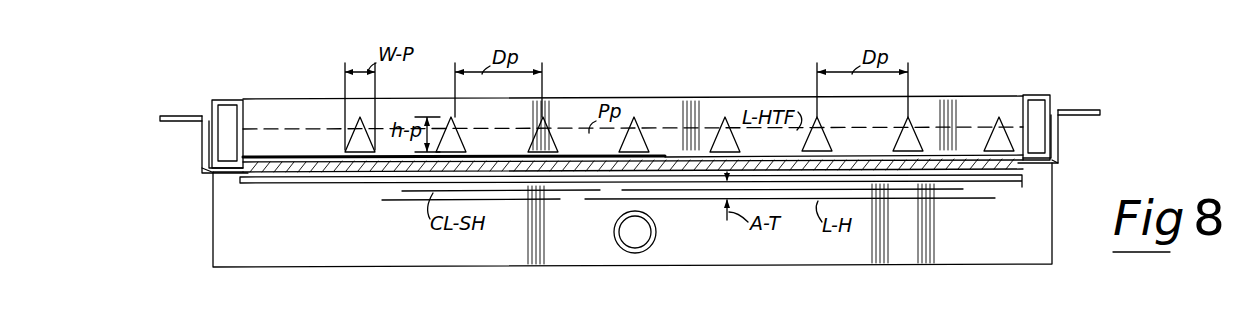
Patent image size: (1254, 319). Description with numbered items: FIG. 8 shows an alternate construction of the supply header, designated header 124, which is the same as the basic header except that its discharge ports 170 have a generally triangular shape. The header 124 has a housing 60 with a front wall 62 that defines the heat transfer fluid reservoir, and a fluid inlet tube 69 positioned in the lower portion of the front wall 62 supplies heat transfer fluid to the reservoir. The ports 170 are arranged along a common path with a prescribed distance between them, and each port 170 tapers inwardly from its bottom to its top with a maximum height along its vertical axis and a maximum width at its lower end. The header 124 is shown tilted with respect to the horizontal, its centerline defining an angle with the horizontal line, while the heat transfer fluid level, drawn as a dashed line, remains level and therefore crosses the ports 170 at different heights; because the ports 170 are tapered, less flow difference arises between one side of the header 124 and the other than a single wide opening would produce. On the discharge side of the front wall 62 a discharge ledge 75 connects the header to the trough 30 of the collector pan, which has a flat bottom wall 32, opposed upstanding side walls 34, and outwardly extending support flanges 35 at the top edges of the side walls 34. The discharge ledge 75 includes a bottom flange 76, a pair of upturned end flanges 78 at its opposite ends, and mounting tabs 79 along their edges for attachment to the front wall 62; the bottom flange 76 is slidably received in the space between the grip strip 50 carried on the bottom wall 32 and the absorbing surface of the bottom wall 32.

The trough 30 is at (160, 136).
The bottom wall 32 is at (226, 178).
The side walls 34 is at (203, 143).
The support flanges 35 is at (178, 115).
The grip strip 50 is at (336, 165).
The housing 60 is at (830, 254).
The front wall 62 is at (903, 244).
The fluid inlet tube 69 is at (637, 256).
The discharge ledge 75 is at (247, 106).
The bottom flange 76 is at (1012, 178).
The end flanges 78 is at (208, 170).
The mounting tabs 79 is at (222, 113).
The header 124 is at (235, 94).
The ports 170 is at (550, 132).